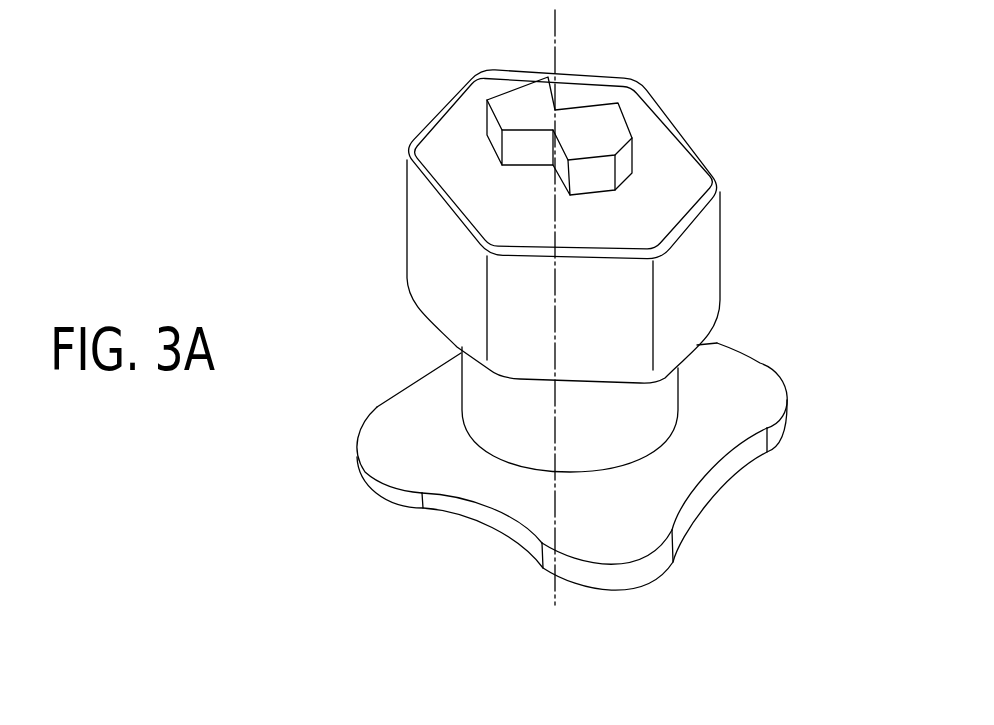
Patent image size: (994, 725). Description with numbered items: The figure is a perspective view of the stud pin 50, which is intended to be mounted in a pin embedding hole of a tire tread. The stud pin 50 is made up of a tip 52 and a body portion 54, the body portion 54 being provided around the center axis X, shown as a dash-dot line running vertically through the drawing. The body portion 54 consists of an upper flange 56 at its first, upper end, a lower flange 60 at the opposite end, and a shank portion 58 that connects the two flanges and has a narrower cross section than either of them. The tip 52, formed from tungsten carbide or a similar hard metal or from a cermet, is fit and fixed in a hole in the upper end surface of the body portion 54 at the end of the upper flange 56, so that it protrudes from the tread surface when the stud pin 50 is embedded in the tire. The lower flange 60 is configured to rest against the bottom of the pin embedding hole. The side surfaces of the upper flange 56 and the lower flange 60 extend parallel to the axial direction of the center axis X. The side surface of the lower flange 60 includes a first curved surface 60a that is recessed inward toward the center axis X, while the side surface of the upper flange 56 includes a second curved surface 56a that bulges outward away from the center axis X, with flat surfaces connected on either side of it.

The stud pin 50 is at (638, 53).
The tip 52 is at (525, 88).
The body portion 54 is at (852, 250).
The upper flange 56 is at (707, 272).
The second curved surface 56a is at (638, 83).
The shank portion 58 is at (663, 397).
The lower flange 60 is at (722, 415).
The first curved surface 60a is at (697, 345).
The center axis X is at (558, 52).